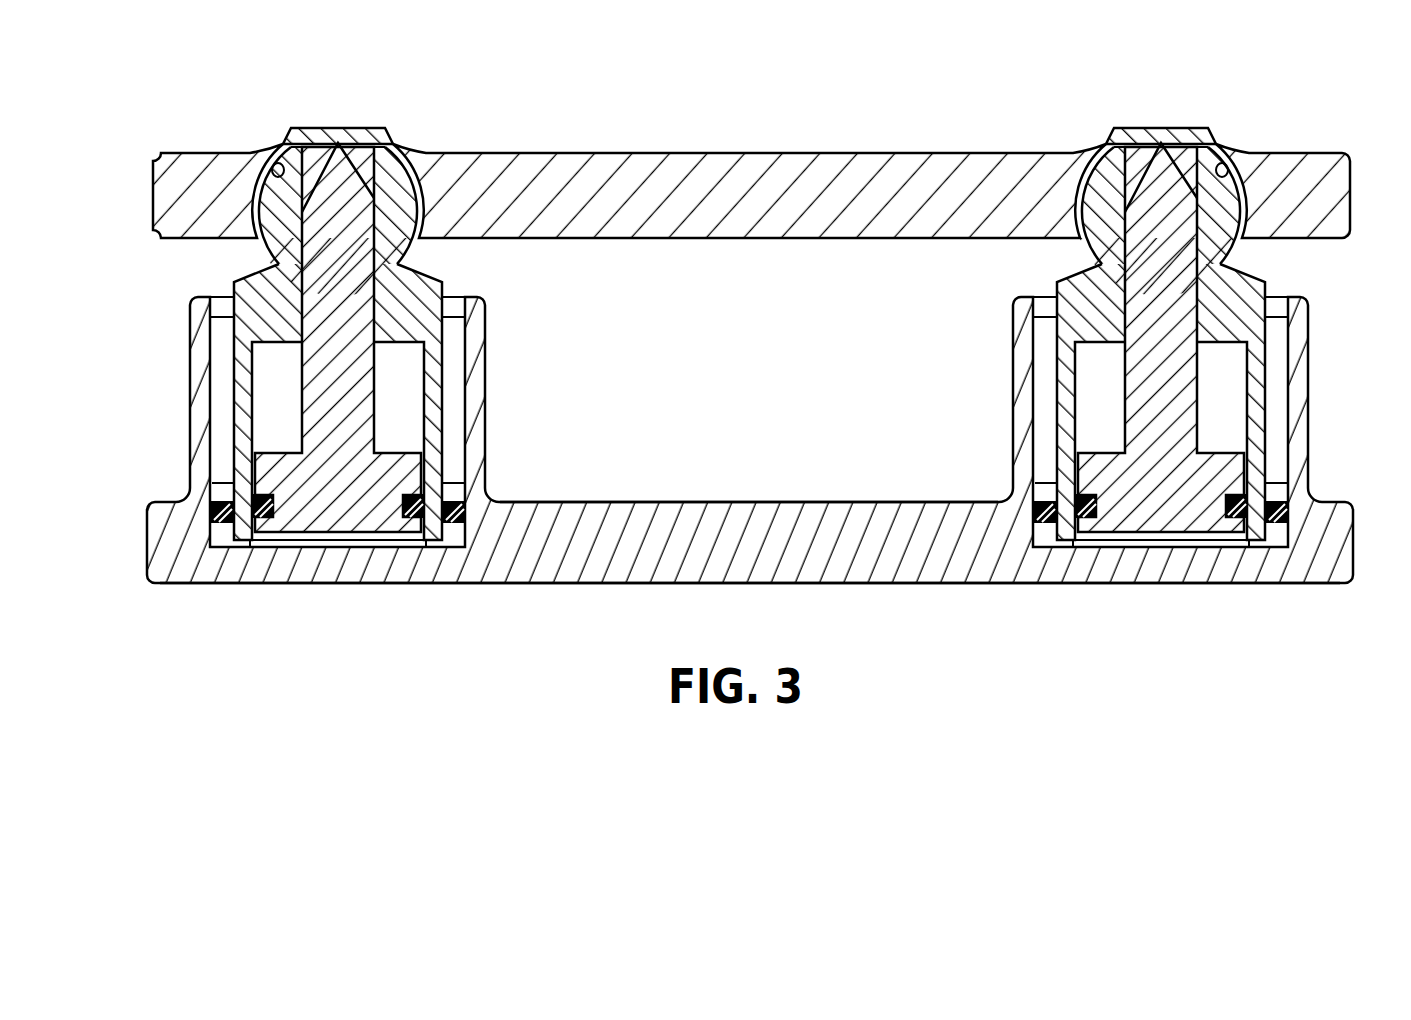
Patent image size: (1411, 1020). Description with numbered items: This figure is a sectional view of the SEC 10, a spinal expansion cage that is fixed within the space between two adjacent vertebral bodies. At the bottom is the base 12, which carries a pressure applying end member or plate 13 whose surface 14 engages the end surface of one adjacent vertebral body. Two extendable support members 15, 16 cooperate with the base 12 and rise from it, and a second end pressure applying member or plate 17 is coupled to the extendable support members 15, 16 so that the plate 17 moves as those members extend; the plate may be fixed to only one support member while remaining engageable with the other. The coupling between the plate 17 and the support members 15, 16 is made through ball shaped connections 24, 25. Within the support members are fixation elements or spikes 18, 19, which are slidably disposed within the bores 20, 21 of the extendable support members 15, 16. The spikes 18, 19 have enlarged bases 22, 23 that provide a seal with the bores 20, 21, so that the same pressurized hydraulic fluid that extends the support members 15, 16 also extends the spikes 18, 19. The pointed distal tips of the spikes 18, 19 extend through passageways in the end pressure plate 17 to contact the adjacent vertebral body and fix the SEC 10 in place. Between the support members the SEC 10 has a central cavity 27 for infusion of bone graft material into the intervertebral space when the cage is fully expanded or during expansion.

The SEC 10 is at (824, 120).
The base 12 is at (1322, 552).
The pressure applying end member or plate 13 is at (725, 515).
The surface 14 is at (597, 584).
The extendable support member 15 is at (430, 272).
The extendable support member 16 is at (1123, 396).
The second end pressure applying member or plate 17 is at (768, 213).
The spike 18 is at (320, 229).
The spike 19 is at (1186, 210).
The bore 20 is at (370, 142).
The bore 21 is at (1148, 114).
The enlarged base 22 is at (340, 131).
The enlarged base 23 is at (1103, 297).
The ball shaped connection 24 is at (278, 163).
The ball shaped connection 25 is at (1259, 146).
The central cavity 27 is at (763, 386).